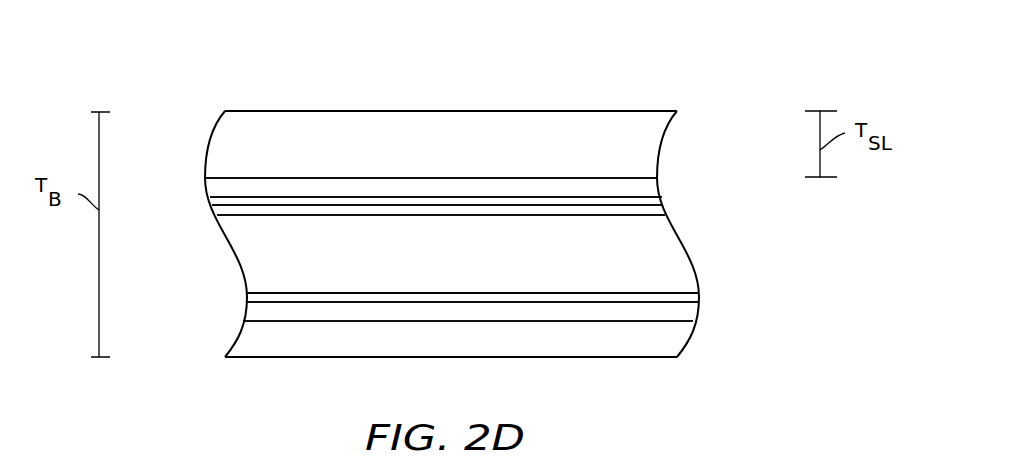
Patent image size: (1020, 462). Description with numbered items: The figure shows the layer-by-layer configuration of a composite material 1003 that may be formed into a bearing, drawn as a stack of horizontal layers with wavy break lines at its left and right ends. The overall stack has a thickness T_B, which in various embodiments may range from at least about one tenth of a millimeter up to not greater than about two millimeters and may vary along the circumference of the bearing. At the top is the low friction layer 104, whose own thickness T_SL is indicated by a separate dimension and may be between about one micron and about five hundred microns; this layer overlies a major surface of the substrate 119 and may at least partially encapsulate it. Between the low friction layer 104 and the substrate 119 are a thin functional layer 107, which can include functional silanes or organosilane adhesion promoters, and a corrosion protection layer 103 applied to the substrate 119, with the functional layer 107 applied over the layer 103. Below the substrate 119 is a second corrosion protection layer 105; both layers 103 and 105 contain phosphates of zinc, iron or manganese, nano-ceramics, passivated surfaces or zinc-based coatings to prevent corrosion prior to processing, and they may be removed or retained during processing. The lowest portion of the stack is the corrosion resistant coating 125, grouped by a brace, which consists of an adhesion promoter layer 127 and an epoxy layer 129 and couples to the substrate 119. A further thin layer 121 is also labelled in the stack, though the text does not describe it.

The composite material 1003 is at (692, 82).
The low friction layer 104 is at (206, 145).
The layer 121 is at (208, 190).
The functional layer 107 is at (665, 203).
The corrosion protection layer 103 is at (668, 211).
The substrate 119 is at (232, 242).
The adhesion promoter layer 127 is at (246, 310).
The corrosion protection layer 105 is at (700, 296).
The epoxy layer 129 is at (232, 344).
The corrosion resistant coating 125 is at (705, 302).